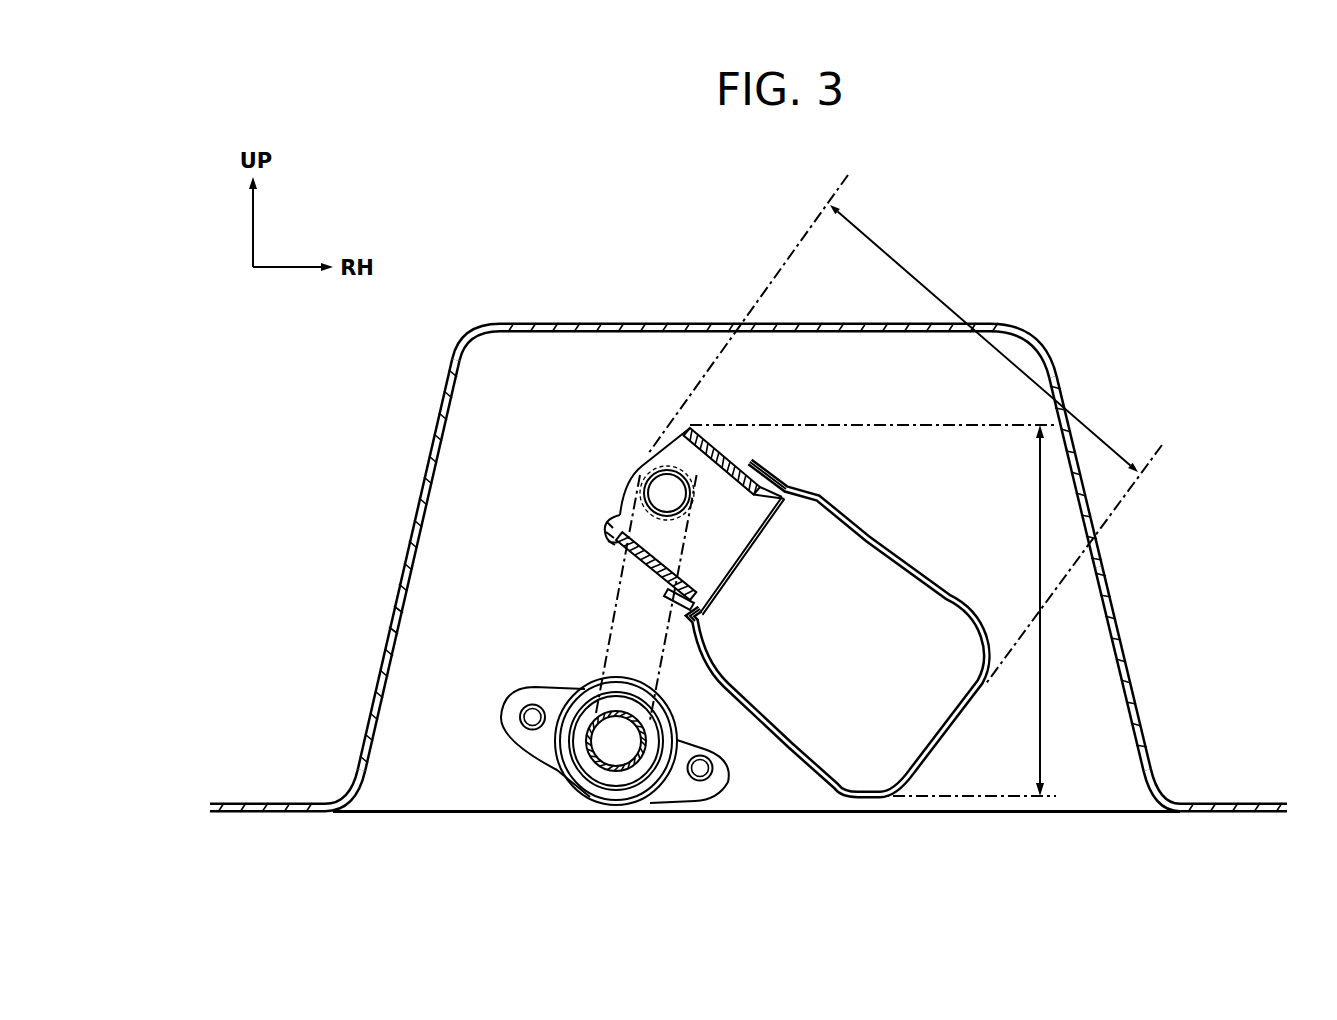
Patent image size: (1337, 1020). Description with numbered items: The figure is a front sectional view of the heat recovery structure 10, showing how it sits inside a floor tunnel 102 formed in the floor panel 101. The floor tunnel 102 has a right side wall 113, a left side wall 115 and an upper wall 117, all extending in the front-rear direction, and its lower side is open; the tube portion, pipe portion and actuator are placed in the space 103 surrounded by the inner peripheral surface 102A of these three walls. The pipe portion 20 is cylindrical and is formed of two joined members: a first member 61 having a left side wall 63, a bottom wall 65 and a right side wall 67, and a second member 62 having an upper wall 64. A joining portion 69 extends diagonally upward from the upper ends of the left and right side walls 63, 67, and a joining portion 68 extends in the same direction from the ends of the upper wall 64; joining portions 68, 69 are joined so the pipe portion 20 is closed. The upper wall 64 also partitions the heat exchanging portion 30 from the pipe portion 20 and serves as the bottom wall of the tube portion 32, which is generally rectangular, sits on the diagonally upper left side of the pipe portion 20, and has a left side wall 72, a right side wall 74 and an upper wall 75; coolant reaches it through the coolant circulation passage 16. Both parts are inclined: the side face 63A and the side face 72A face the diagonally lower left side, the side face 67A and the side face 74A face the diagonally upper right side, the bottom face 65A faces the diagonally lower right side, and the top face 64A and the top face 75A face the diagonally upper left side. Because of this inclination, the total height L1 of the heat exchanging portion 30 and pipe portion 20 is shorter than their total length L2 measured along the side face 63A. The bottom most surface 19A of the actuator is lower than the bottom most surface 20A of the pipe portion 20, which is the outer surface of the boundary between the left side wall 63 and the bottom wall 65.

The vehicle body structure 10 is at (502, 455).
The coolant circulation passage 16 is at (602, 649).
The bottom most surface of the actuator 19A is at (612, 806).
The pipe portion 20 is at (954, 445).
The bottom most surface of the pipe portion 20A is at (884, 798).
The heat exchanging portion 30 is at (573, 511).
The tube portion 32 is at (607, 521).
The first member 61 is at (868, 522).
The second member 62 is at (758, 552).
The left side wall 63 is at (760, 740).
The side face of the left side wall 63A is at (796, 758).
The upper wall 64 is at (673, 507).
The top face of the upper wall 64A is at (727, 588).
The bottom wall 65 is at (922, 768).
The bottom face of the bottom wall 65A is at (950, 728).
The right side wall 67 is at (918, 546).
The side face of the right side wall 67A is at (940, 576).
The joining portion 68 is at (752, 476).
The joining portion 69 is at (795, 478).
The left side wall 72 is at (650, 570).
The side face of the left side wall 72A is at (666, 594).
The right side wall 74 is at (752, 458).
The side face of the right side wall 74A is at (722, 428).
The upper wall 75 is at (630, 490).
The top face of the upper wall 75A is at (658, 438).
The floor panel 101 is at (268, 800).
The floor tunnel 102 is at (1136, 573).
The inner peripheral surface 102A is at (1097, 630).
The space 103 is at (466, 637).
The right side wall 113 is at (1108, 542).
The left side wall 115 is at (404, 533).
The upper wall 117 is at (628, 323).
The total length in the height direction L1 is at (1044, 697).
The total length along the side face L2 is at (938, 296).